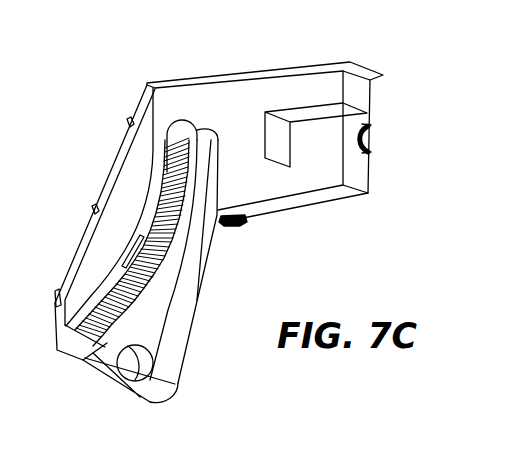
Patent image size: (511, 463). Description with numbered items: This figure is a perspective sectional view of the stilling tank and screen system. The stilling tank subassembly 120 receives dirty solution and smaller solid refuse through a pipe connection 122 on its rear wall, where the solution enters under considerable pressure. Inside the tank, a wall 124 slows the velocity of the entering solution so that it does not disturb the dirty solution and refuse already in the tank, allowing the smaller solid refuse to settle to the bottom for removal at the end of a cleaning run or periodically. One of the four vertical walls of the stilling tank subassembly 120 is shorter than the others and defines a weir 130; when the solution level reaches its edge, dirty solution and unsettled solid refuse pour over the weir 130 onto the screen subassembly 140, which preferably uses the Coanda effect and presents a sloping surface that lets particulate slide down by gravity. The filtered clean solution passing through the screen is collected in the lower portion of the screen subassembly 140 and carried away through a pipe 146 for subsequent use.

The stilling tank subassembly 120 is at (404, 63).
The pipe connection 122 is at (373, 139).
The wall 124 is at (275, 142).
The weir 130 is at (182, 132).
The screen subassembly 140 is at (213, 280).
The pipe 146 is at (180, 386).